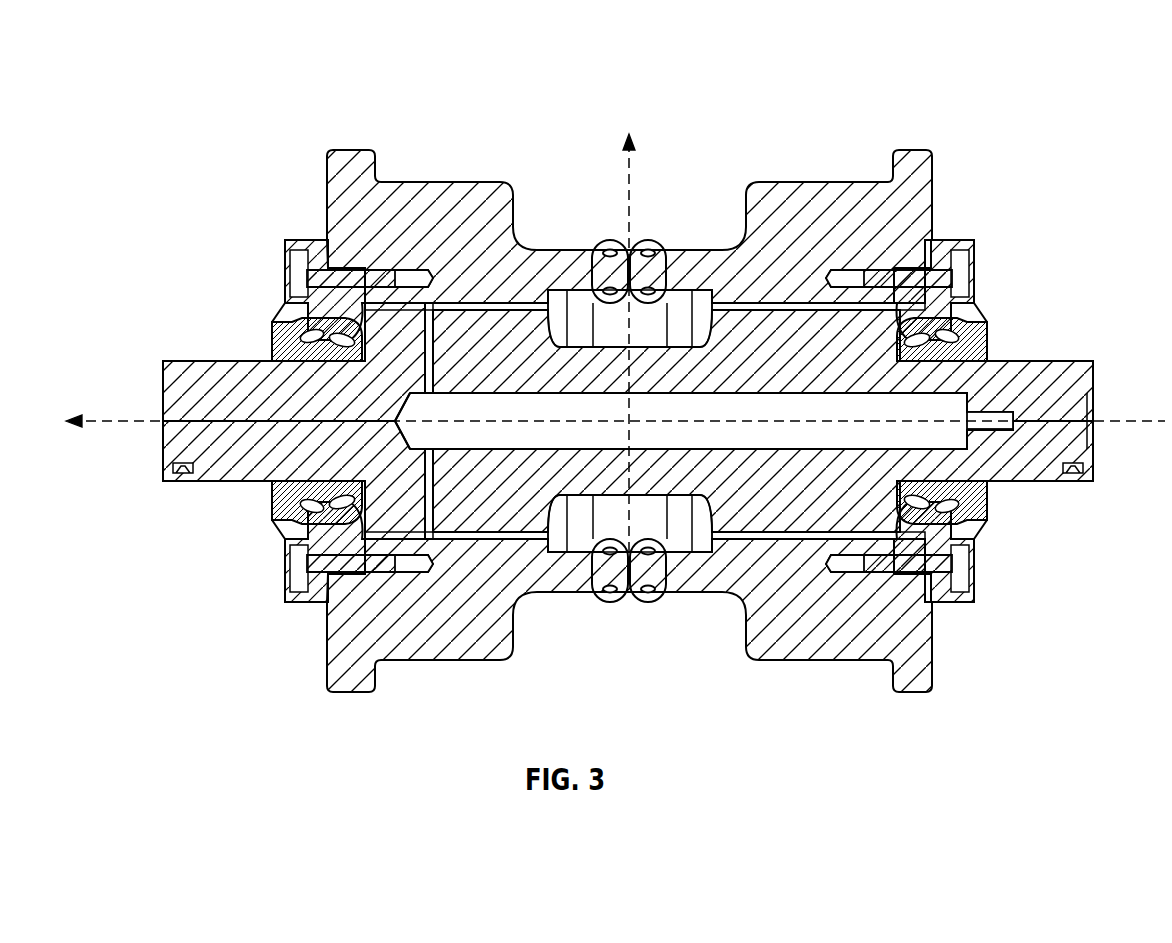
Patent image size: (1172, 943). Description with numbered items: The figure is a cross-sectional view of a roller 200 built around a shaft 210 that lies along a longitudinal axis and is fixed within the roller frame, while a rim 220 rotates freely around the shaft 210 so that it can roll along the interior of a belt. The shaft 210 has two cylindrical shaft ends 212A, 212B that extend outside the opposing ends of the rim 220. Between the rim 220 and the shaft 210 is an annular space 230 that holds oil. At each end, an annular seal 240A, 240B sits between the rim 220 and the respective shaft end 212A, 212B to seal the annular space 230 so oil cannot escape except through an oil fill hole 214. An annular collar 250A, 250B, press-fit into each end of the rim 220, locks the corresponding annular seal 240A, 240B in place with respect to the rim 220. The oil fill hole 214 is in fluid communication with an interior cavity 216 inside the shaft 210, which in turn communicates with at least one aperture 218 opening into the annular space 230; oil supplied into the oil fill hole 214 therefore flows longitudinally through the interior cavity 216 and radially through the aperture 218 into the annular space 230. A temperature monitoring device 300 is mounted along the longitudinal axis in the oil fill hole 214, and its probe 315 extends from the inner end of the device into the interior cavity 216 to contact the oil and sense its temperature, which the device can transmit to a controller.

The roller 200 is at (154, 78).
The shaft 210 is at (183, 400).
The shaft end 212A is at (222, 460).
The shaft end 212B is at (1050, 463).
The oil fill hole 214 is at (1093, 403).
The interior cavity 216 is at (800, 403).
The aperture 218 is at (427, 318).
The rim 220 is at (398, 647).
The annular space 230 is at (546, 302).
The annular seal 240A is at (290, 317).
The annular seal 240B is at (970, 265).
The annular collar 250A is at (272, 360).
The annular collar 250B is at (987, 340).
The temperature monitoring device 300 is at (1093, 435).
The probe 315 is at (987, 433).